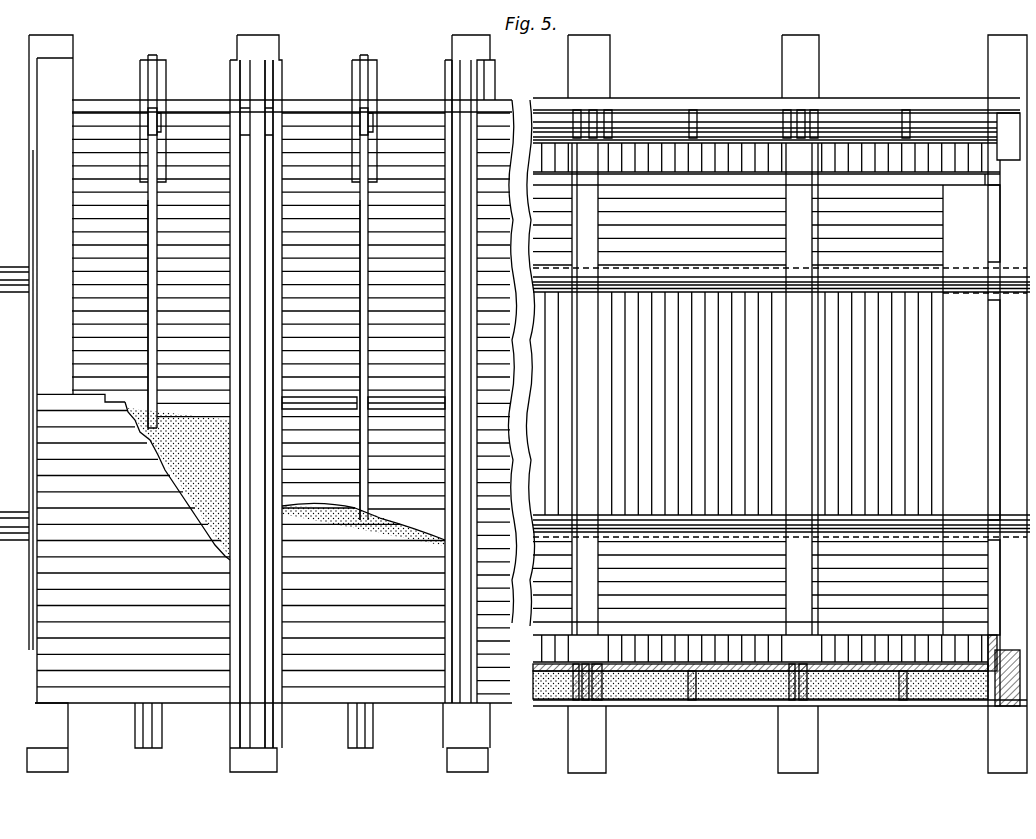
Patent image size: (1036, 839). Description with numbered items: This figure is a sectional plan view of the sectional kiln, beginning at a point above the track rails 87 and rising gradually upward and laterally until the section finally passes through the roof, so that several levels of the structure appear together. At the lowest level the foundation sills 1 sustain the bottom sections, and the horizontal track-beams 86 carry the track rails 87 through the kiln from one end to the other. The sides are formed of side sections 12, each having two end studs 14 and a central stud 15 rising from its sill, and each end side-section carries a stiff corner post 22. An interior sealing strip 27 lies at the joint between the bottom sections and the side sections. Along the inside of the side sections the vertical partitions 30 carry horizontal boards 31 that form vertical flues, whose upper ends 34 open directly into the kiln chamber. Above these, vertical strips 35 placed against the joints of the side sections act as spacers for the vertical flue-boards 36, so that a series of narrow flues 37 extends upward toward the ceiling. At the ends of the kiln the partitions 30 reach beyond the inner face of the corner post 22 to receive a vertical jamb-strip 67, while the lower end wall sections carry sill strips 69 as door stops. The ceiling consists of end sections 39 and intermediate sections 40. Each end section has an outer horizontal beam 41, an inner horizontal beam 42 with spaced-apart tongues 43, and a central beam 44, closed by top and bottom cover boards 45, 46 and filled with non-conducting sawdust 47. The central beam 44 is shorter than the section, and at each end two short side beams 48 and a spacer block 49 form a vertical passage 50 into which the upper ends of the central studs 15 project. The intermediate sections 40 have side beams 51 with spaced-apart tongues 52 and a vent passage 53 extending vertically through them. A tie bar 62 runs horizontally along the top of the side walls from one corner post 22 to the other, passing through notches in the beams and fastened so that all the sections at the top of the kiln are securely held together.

The foundation sill 1 is at (693, 404).
The side section 12 is at (660, 702).
The end stud 14 is at (600, 702).
The central stud 15 is at (157, 126).
The corner post 22 is at (1010, 716).
The interior sealing strip 27 is at (935, 662).
The vertical partition 30 is at (686, 174).
The horizontal board 31 is at (964, 178).
The upper end of lower flue 34 is at (748, 176).
The vertical strip 35 is at (604, 136).
The vertical flue-board 36 is at (756, 402).
The narrow flue 37 is at (548, 140).
The end ceiling section 39 is at (132, 251).
The intermediate ceiling section 40 is at (399, 397).
The outer horizontal beam 41 is at (36, 403).
The inner horizontal beam 42 is at (231, 70).
The spaced-apart tongue 43 is at (240, 196).
The central beam 44 is at (148, 318).
The top cover board 45 is at (241, 540).
The bottom cover board 46 is at (193, 265).
The non-conducting filling 47 is at (176, 449).
The short side beam 48 is at (140, 74).
The spacer block 49 is at (152, 62).
The vertical passage 50 is at (148, 125).
The side beam 51 is at (282, 76).
The spaced-apart tongue 52 is at (268, 192).
The vent passage 53 is at (308, 397).
The tie bar 62 is at (84, 101).
The vertical jamb-strip 67 is at (985, 178).
The sill strip 69 is at (988, 246).
The horizontal track-beam 86 is at (642, 294).
The track rail 87 is at (740, 282).